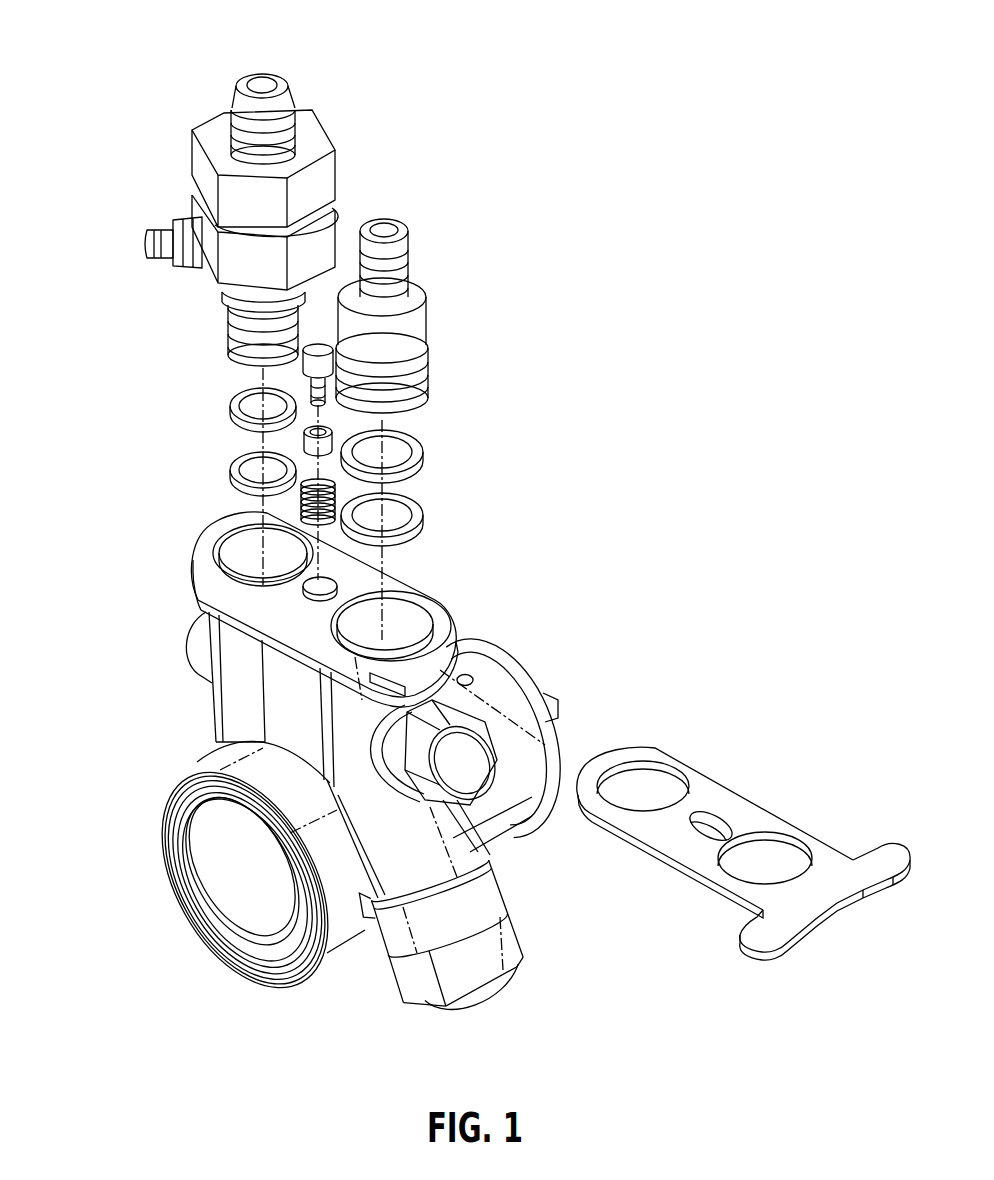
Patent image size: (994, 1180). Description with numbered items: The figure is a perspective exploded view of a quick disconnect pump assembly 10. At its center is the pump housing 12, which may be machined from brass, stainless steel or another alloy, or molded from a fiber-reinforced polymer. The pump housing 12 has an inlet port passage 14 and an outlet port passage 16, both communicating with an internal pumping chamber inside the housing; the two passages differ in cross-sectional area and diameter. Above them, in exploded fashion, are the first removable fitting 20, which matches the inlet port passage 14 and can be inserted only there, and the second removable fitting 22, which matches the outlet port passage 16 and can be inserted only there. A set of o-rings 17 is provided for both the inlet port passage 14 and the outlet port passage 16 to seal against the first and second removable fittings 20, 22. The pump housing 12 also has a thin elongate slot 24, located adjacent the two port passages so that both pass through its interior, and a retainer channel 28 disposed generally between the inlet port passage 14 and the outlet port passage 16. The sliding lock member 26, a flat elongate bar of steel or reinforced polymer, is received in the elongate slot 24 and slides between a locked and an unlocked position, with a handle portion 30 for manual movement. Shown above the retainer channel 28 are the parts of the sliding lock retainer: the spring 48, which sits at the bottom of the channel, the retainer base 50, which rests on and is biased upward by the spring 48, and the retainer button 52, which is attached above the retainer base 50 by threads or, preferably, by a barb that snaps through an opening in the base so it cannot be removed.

The quick disconnect pump assembly 10 is at (118, 858).
The pump housing 12 is at (190, 932).
The inlet port passage 14 is at (413, 616).
The outlet port passage 16 is at (250, 545).
The o-rings 17 is at (233, 403).
The first removable fitting 20 is at (387, 223).
The second removable fitting 22 is at (268, 72).
The elongate slot 24 is at (468, 650).
The sliding lock member 26 is at (732, 790).
The retainer channel 28 is at (303, 587).
The handle portion 30 is at (870, 885).
The spring 48 is at (310, 512).
The retainer base 50 is at (315, 428).
The retainer button 52 is at (318, 348).